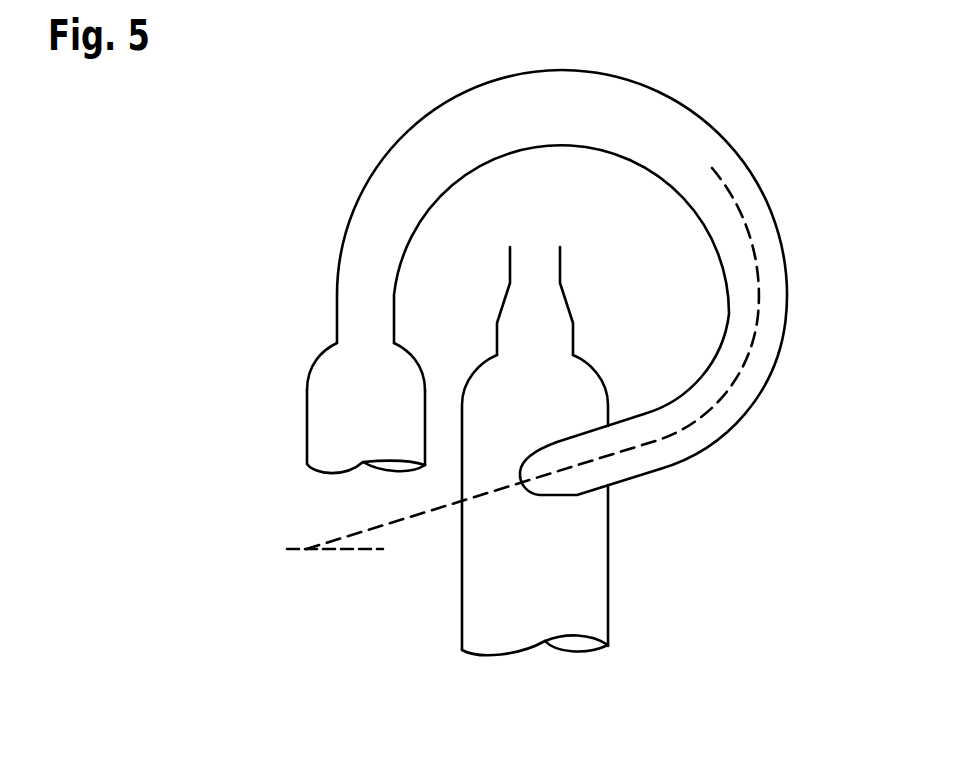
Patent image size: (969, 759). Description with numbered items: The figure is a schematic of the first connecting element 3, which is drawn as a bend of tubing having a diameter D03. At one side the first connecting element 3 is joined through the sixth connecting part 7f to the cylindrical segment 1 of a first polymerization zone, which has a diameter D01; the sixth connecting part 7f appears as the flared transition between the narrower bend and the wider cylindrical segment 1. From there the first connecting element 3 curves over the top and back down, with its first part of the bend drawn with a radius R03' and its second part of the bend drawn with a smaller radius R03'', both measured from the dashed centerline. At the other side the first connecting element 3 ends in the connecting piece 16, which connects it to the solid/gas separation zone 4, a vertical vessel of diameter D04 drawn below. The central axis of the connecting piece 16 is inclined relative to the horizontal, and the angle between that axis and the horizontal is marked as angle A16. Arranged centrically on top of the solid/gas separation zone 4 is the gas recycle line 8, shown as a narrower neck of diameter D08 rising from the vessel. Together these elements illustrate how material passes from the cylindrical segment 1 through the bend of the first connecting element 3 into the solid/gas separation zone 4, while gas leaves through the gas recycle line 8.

The cylindrical segment 1 is at (307, 427).
The first connecting element 3 is at (350, 220).
The solid/gas separation zone 4 is at (608, 555).
The sixth connecting part 7f is at (317, 364).
The gas recycle line 8 is at (510, 262).
The connecting piece 16 is at (520, 464).
The diameter of the cylindrical segment D01 is at (425, 443).
The diameter of the first connecting element D03 is at (394, 320).
The diameter of the solid/gas separation zone D04 is at (608, 622).
The diameter of the gas recycle line D08 is at (560, 268).
The radius of the first part of the bend R03' is at (652, 258).
The radius of the second part of the bend R03'' is at (671, 337).
The angle between the connecting piece axis and the horizontal A16 is at (356, 500).